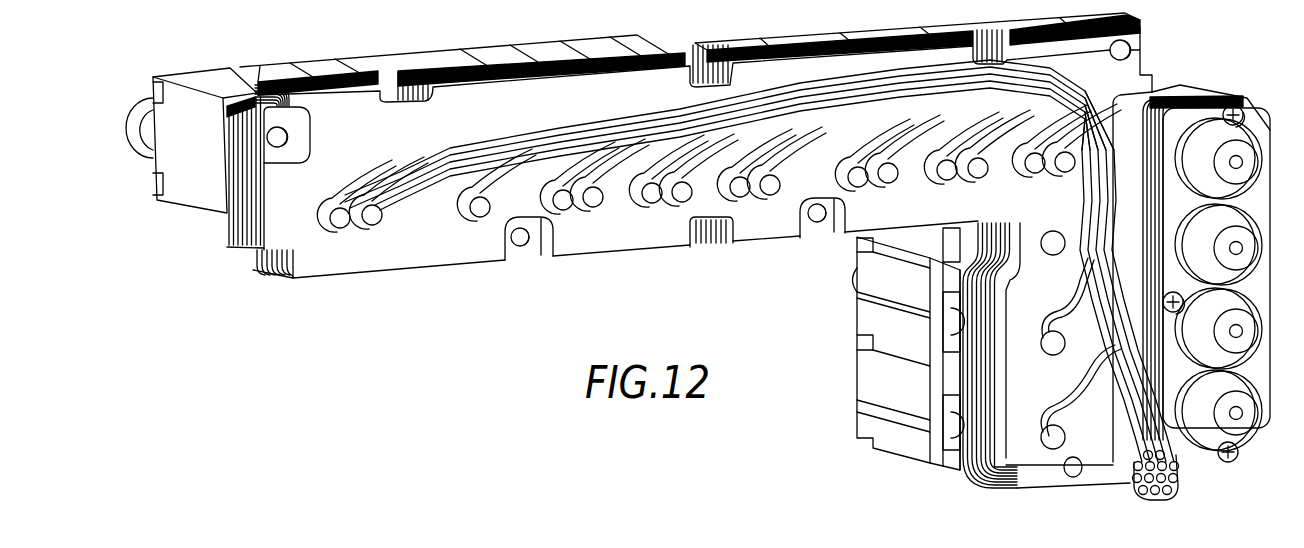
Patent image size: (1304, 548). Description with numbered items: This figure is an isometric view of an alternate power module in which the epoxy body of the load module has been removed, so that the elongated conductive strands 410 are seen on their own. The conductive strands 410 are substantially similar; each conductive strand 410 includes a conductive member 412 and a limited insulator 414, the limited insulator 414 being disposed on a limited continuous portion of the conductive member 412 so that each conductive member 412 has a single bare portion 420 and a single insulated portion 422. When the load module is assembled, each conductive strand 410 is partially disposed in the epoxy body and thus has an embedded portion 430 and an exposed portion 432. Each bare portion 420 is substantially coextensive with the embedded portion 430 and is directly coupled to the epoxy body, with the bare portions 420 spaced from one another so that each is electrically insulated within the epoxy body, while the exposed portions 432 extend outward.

The conductive strand 410 is at (1096, 252).
The conductive member 412 is at (1180, 478).
The limited insulator 414 is at (1133, 385).
The bare portion 420 is at (803, 107).
The insulated portion 422 is at (1105, 290).
The embedded portion 430 is at (743, 122).
The exposed portion 432 is at (1175, 448).